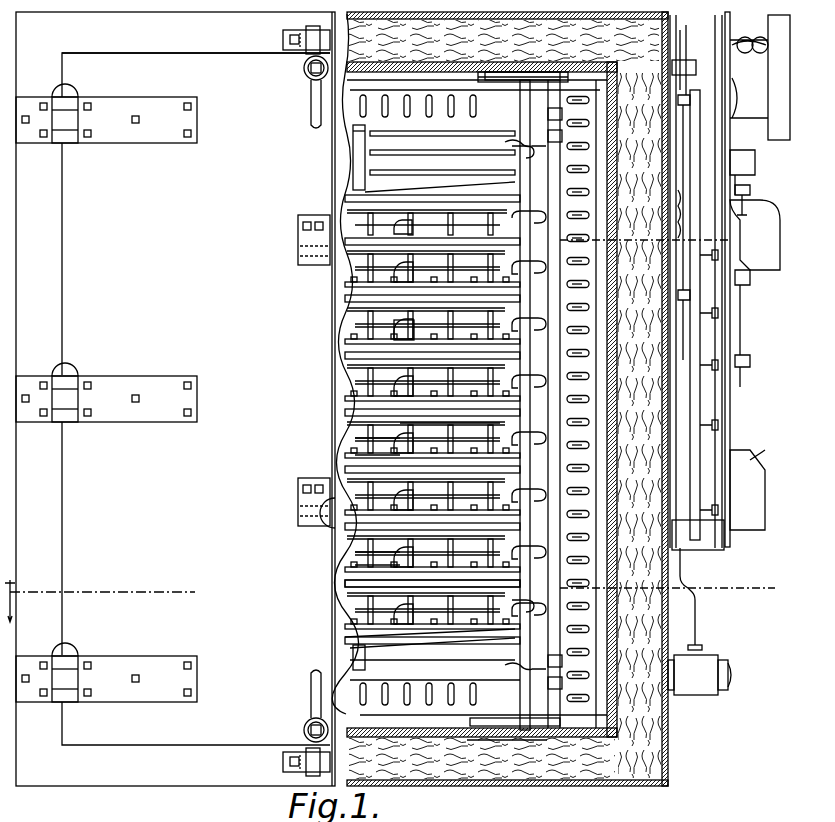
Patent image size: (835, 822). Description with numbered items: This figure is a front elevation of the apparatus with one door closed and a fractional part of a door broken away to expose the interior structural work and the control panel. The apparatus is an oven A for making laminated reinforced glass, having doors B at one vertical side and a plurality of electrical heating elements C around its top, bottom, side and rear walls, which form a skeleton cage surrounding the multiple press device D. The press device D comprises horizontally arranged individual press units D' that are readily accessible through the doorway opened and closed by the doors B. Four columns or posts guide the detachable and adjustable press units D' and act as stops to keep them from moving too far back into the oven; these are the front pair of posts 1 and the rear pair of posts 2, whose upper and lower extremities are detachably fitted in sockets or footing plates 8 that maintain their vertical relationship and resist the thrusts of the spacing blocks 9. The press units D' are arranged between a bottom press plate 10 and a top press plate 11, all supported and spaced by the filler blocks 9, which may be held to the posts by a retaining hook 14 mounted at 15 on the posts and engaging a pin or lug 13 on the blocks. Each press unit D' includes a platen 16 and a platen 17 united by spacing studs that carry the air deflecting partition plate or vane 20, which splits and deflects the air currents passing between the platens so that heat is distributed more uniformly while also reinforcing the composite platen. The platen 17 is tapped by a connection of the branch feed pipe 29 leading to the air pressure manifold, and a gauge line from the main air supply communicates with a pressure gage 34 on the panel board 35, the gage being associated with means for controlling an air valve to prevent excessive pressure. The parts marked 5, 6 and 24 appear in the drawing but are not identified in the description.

The front columns or posts 1 is at (528, 112).
The rear columns or posts 2 is at (768, 570).
The latch / pipe fitting 5 is at (347, 26).
The handle 6 is at (316, 78).
The sockets or footing plates 8 is at (512, 80).
The spacing elements or filler blocks 9 is at (514, 152).
The bottom press plate 10 is at (360, 634).
The top press plate 11 is at (372, 192).
The pin or lug 13 is at (508, 138).
The retaining hook 14 is at (556, 132).
The hook mounting 15 is at (560, 175).
The platen 16 is at (358, 436).
The platen 17 is at (358, 452).
The air deflecting partition plate or vane 20 is at (356, 556).
The shelf plate 24 is at (356, 588).
The branch feed pipe 29 is at (403, 423).
The pressure gage 34 is at (738, 184).
The panel board 35 is at (720, 234).
The oven A is at (196, 33).
The doors B is at (175, 399).
The electrical heating elements C is at (378, 172).
The multiple press device D is at (418, 419).
The individual press unit D' is at (352, 321).